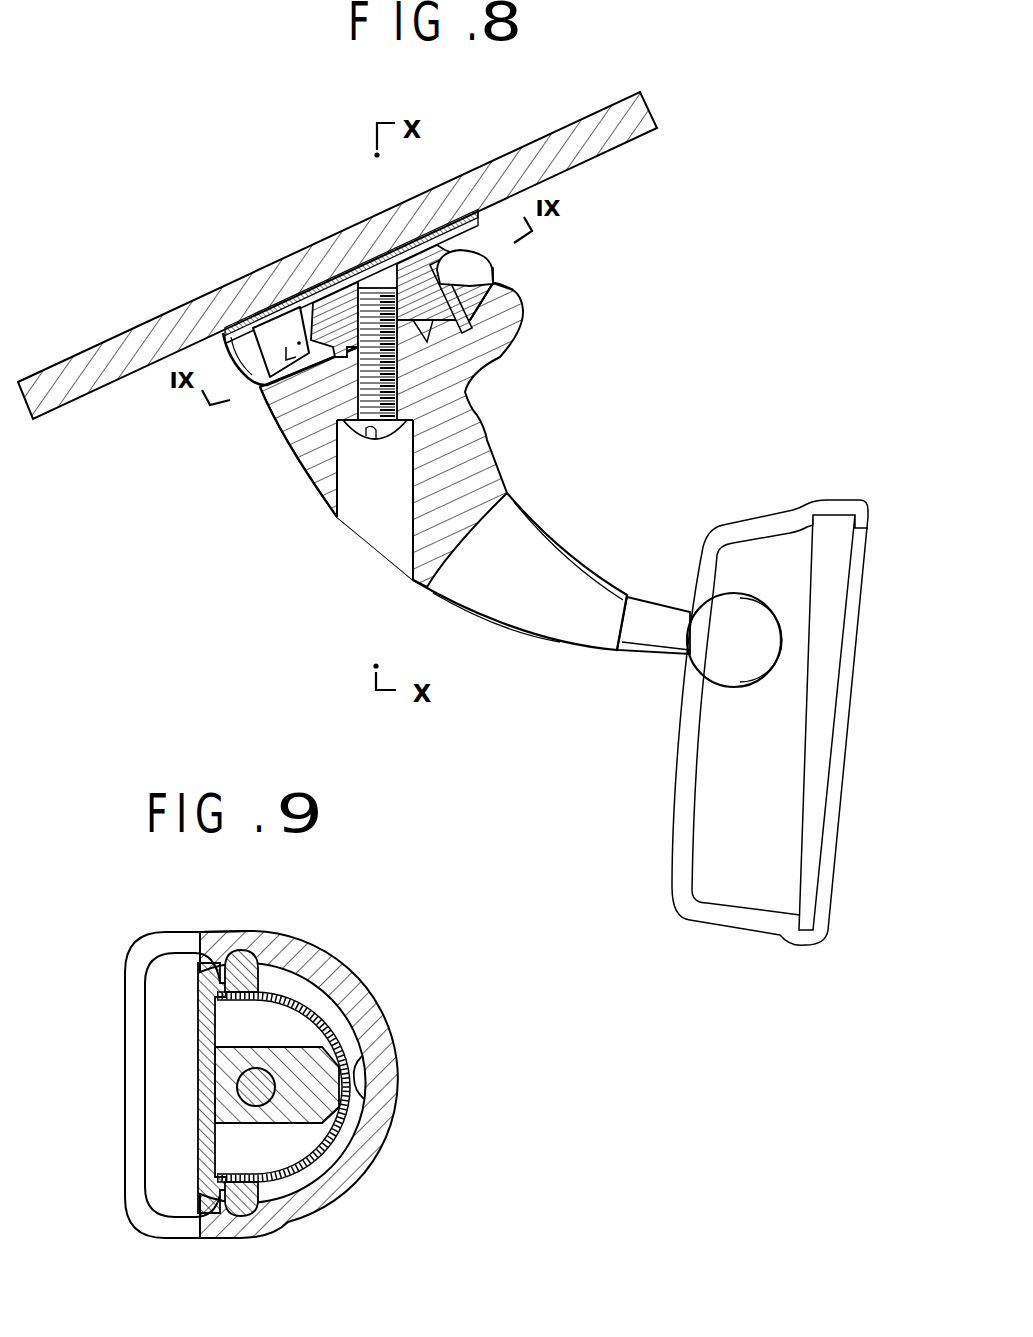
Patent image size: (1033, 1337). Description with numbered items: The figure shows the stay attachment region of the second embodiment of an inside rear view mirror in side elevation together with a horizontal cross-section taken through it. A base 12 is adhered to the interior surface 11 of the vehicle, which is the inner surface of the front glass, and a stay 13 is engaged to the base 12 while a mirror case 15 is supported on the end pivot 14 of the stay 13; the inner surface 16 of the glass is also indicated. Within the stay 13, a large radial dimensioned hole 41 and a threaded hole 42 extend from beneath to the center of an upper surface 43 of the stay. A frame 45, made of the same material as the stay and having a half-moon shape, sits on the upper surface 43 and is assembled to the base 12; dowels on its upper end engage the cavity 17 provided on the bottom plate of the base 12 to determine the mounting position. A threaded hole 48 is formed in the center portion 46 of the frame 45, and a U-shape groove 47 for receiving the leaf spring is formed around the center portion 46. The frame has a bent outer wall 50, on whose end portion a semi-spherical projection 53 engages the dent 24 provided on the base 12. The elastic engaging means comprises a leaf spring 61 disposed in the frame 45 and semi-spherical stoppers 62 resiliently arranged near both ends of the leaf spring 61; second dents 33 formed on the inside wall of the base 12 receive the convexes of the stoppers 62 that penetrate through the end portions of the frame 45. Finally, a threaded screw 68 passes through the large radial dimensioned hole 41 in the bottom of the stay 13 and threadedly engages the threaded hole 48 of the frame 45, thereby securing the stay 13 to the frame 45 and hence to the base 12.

In FIG. 8, the interior surface 11 is at (125, 377).
In FIG. 8, the base 12 is at (250, 380).
In FIG. 9, the base 12 is at (366, 971).
In FIG. 8, the stay 13 is at (537, 613).
In FIG. 8, the end pivot 14 is at (718, 668).
In FIG. 8, the mirror case 15 is at (746, 520).
In FIG. 8, the inner surface of glass 16 is at (468, 215).
In FIG. 8, the cavity 17 is at (277, 332).
In FIG. 9, the cavity 17 is at (153, 1067).
In FIG. 9, the dent 24 is at (380, 1065).
In FIG. 9, the second dents 33 is at (245, 950).
In FIG. 8, the large radial dimensioned hole 41 is at (378, 537).
In FIG. 8, the threaded hole 42 is at (420, 408).
In FIG. 8, the upper surface 43 is at (288, 380).
In FIG. 8, the frame 45 is at (270, 336).
In FIG. 9, the frame 45 is at (200, 965).
In FIG. 9, the center portion 46 is at (237, 1118).
In FIG. 9, the U-shape groove 47 is at (224, 1036).
In FIG. 8, the threaded hole 48 is at (350, 268).
In FIG. 8, the bent outer wall 50 is at (498, 282).
In FIG. 8, the semi-spherical projection 53 is at (470, 258).
In FIG. 9, the semi-spherical projection 53 is at (365, 1092).
In FIG. 8, the leaf spring 61 is at (470, 315).
In FIG. 9, the leaf spring 61 is at (291, 1158).
In FIG. 9, the semi-spherical stoppers 62 is at (282, 935).
In FIG. 8, the threaded screw 68 is at (386, 445).
In FIG. 9, the threaded screw 68 is at (264, 1068).